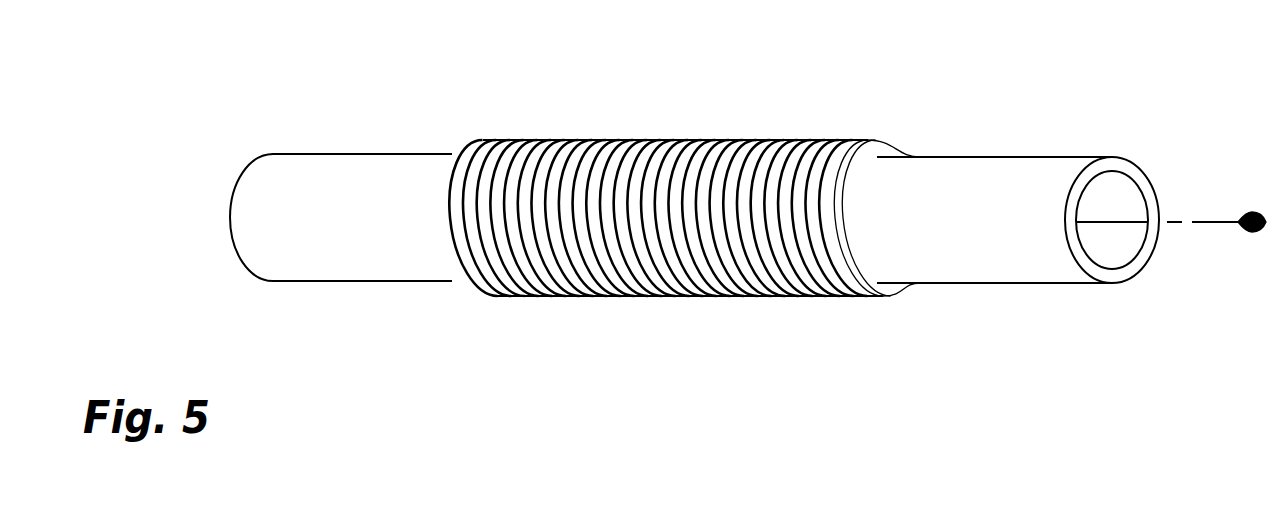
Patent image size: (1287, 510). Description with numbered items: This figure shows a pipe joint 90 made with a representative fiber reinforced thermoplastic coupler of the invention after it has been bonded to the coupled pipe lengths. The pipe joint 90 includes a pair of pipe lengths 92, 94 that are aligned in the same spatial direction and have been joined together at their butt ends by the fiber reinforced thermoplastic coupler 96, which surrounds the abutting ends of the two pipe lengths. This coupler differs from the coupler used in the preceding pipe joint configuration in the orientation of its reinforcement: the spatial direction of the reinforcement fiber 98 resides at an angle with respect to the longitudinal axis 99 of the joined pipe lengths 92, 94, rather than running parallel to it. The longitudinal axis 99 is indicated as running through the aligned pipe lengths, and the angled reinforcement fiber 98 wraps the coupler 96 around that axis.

The pipe joint 90 is at (1186, 80).
The pipe length 92 is at (380, 157).
The pipe length 94 is at (993, 158).
The fiber reinforced thermoplastic coupler 96 is at (883, 150).
The reinforcement fiber 98 is at (548, 157).
The longitudinal axis 99 is at (1202, 222).